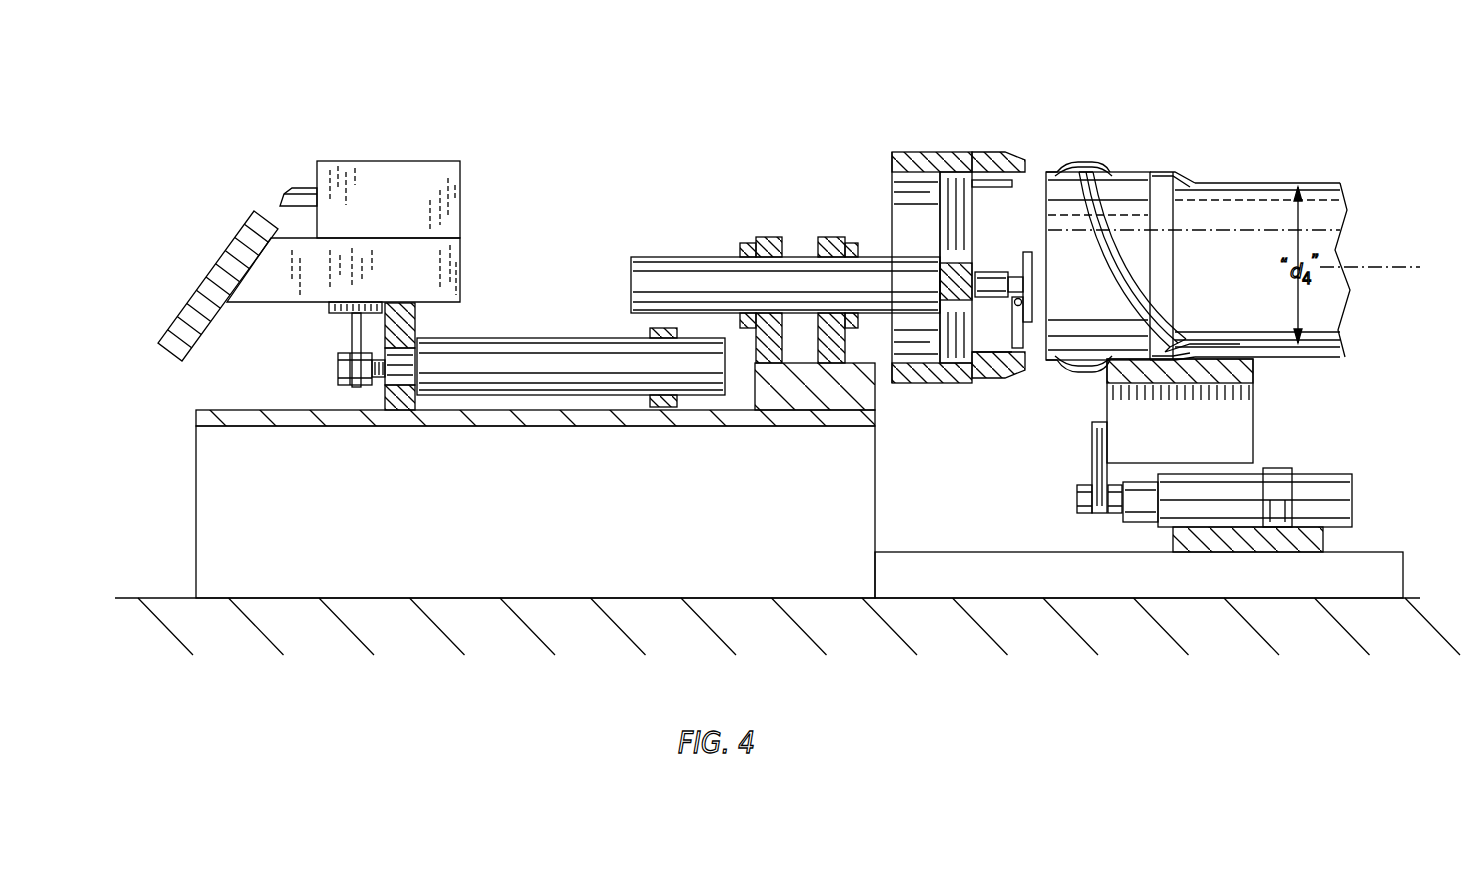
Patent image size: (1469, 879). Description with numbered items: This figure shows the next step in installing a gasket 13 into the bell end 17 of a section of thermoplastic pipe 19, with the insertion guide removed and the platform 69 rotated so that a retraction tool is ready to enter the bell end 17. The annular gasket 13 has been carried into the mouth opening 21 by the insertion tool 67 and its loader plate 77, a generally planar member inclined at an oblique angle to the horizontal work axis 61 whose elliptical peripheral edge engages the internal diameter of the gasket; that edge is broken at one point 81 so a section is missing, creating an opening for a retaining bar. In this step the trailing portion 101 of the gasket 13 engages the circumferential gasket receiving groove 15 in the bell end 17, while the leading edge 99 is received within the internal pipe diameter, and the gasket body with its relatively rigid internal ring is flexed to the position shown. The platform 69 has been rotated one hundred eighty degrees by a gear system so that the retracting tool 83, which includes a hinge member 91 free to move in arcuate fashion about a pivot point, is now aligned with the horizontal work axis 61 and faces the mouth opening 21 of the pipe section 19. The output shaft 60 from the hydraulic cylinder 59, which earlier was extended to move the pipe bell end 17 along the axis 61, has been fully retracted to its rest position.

The gasket 13 is at (1110, 230).
The gasket receiving groove 15 is at (1068, 350).
The bell end 17 is at (1128, 170).
The thermoplastic pipe 19 is at (1282, 182).
The mouth opening 21 is at (1036, 168).
The hydraulic cylinder 59 is at (1250, 512).
The output shaft 60 is at (1142, 505).
The horizontal work axis 61 is at (1362, 266).
The insertion tool 67 is at (378, 178).
The platform 69 is at (318, 425).
The loader plate 77 is at (223, 263).
The break point 81 is at (297, 190).
The retracting tool 83 is at (998, 282).
The hinge member 91 is at (1023, 337).
The leading edge 99 is at (1187, 353).
The trailing edge 101 is at (1080, 165).